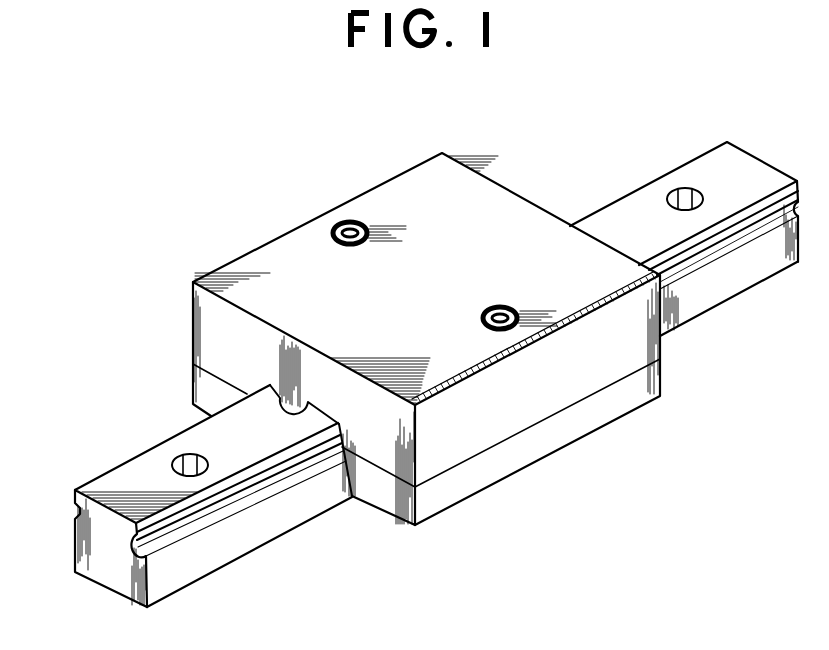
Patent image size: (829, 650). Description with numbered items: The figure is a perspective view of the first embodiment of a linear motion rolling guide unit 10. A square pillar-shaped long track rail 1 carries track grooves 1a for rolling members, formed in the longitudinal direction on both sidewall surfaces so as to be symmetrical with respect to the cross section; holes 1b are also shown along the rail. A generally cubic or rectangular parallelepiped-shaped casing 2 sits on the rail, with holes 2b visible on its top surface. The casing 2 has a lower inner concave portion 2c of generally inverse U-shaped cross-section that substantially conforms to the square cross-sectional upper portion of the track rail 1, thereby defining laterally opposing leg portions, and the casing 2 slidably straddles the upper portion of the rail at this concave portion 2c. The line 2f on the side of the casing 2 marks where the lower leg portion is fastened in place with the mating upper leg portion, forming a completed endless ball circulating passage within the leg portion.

The linear motion rolling guide unit 10 is at (363, 169).
The track rail 1 is at (73, 545).
The track grooves 1a is at (250, 500).
The mounting hole of track rail 1b is at (200, 458).
The casing 2 is at (567, 378).
The threaded mounting holes of slider 2b is at (368, 236).
The lower inner concave portion 2c is at (311, 403).
The line 2f is at (665, 358).